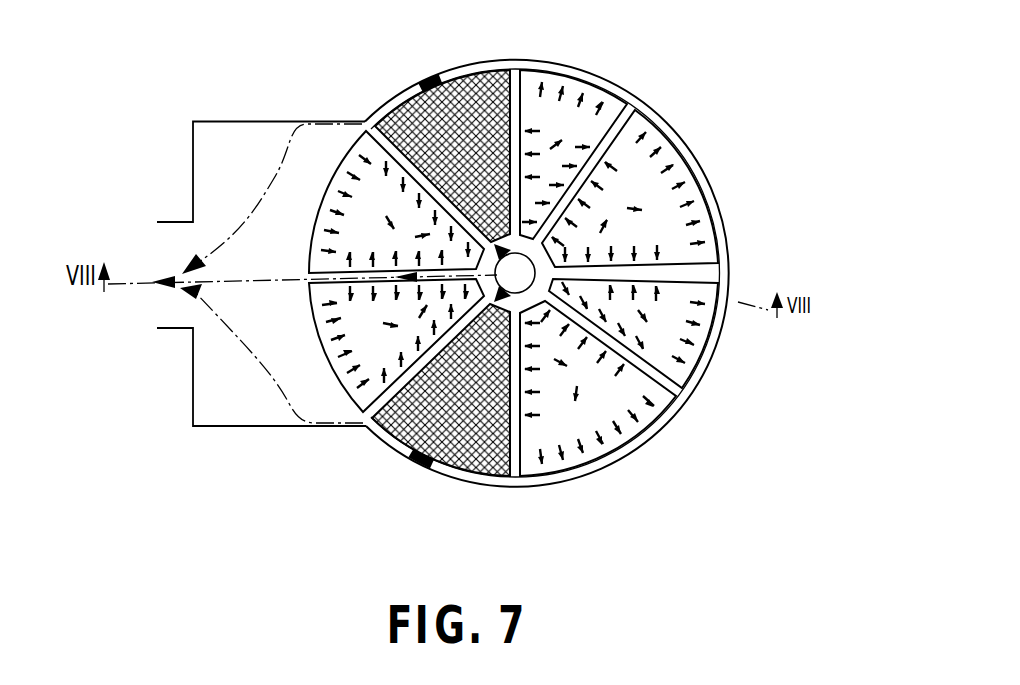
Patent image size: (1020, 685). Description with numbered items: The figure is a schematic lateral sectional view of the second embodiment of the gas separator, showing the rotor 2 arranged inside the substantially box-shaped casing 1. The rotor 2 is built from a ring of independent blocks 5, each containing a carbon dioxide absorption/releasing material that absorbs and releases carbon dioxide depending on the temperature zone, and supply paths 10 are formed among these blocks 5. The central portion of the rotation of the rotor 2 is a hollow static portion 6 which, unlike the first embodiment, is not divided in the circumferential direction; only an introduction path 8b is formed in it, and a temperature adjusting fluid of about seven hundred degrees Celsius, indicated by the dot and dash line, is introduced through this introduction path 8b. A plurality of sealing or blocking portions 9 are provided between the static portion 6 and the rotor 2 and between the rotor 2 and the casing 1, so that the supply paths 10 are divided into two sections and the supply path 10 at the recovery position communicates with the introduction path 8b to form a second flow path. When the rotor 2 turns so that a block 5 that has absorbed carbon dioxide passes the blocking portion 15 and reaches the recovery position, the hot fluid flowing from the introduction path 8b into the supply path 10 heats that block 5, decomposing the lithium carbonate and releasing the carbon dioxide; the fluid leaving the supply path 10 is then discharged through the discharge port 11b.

The casing 1 is at (722, 203).
The rotor 2 is at (628, 93).
The block 5 is at (565, 122).
The hollow static portion 6 is at (521, 313).
The introduction path 8b is at (521, 280).
The sealing portion 9 is at (427, 84).
The supply path 10 is at (394, 386).
The discharge port 11b is at (175, 326).
The blocking portion 15 is at (477, 120).